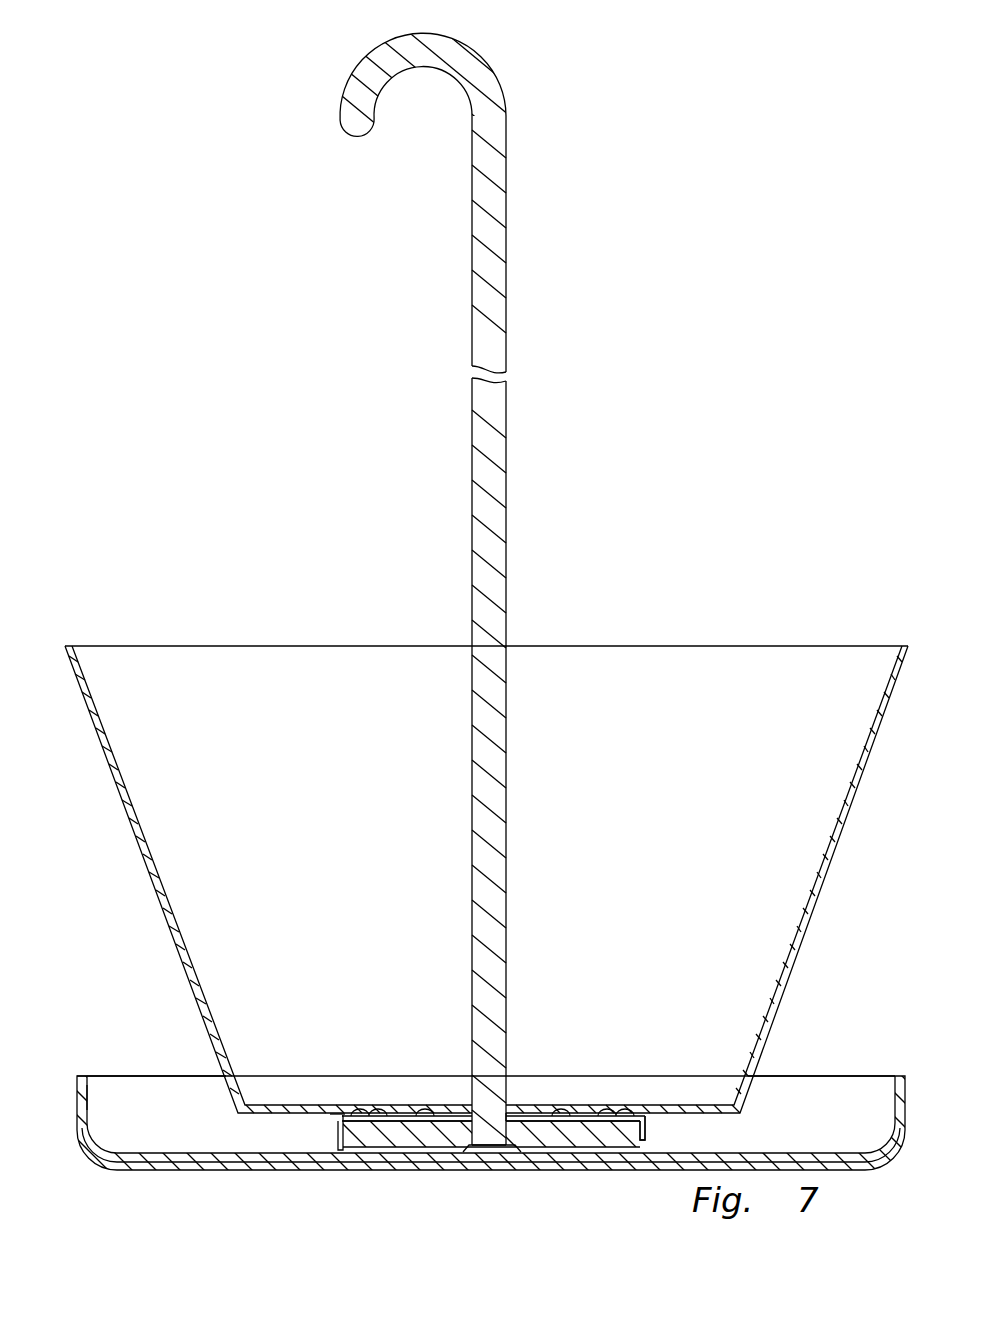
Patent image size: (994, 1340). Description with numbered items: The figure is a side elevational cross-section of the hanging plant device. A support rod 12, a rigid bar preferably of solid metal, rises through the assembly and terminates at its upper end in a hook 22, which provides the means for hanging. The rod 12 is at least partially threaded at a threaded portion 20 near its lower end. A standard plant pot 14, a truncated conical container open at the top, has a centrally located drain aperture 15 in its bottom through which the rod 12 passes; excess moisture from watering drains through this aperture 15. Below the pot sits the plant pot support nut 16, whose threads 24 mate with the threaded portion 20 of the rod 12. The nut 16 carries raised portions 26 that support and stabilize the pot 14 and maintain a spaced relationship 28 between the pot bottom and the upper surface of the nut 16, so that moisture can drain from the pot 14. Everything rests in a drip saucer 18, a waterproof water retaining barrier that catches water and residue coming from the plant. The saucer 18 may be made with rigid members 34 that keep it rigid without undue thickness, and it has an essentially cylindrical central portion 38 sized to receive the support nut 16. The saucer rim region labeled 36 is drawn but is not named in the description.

The support rod 12 is at (487, 478).
The plant pot 14 is at (820, 876).
The drain aperture 15 is at (512, 1117).
The plant pot support nut 16 is at (392, 1142).
The drip saucer 18 is at (813, 1072).
The threaded portion 20 is at (505, 1150).
The hook 22 is at (400, 58).
The threads 24 is at (540, 1124).
The raised portions 26 is at (355, 1112).
The spaced relationship 28 is at (318, 1118).
The rigid members 34 is at (93, 1097).
The saucer rim 36 is at (78, 1076).
The central portion 38 is at (657, 1138).